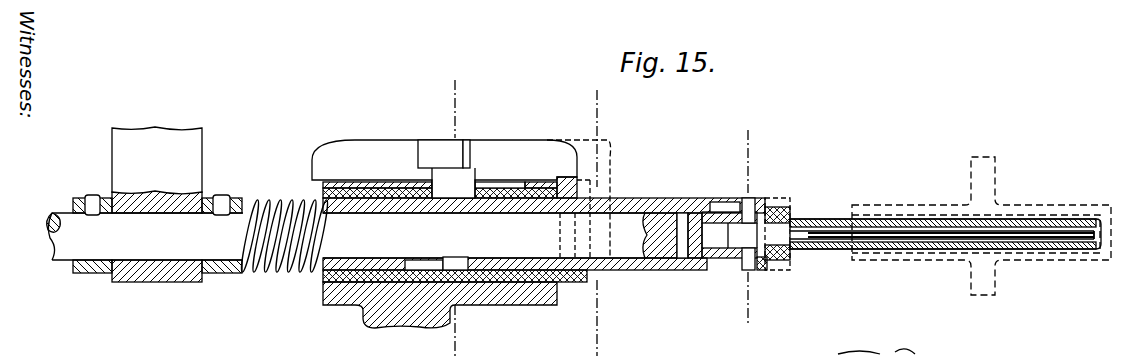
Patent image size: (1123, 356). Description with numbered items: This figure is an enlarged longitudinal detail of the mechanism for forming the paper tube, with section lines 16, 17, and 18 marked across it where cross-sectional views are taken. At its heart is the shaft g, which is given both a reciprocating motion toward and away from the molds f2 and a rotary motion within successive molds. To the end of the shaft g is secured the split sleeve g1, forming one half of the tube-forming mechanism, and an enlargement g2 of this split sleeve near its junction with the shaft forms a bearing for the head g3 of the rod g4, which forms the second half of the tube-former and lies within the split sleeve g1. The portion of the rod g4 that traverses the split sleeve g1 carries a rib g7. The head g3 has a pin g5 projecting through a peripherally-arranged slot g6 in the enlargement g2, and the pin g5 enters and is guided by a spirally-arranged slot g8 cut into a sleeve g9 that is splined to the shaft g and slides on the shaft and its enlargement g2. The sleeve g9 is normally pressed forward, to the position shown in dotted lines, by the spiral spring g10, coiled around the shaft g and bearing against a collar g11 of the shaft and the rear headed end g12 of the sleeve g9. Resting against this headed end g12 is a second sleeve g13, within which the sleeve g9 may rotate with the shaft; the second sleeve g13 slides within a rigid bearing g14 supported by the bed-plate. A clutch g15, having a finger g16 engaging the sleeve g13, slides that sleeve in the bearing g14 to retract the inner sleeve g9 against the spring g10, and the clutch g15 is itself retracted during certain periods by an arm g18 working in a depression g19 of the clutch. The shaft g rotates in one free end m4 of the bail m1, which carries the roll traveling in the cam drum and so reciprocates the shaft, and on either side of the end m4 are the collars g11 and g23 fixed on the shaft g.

The shaft g is at (67, 250).
The split sleeve g1 is at (838, 252).
The enlargement g2 is at (710, 270).
The head g3 is at (758, 227).
The rod g4 is at (920, 238).
The pin g5 is at (750, 200).
The peripherally-arranged slot g6 is at (760, 263).
The rib g7 is at (1048, 234).
The spirally-arranged slot g8 is at (722, 200).
The sleeve g9 is at (348, 203).
The spiral spring g10 is at (297, 270).
The collar g11 is at (225, 278).
The rear headed end g12 is at (323, 283).
The second sleeve g13 is at (352, 188).
The rigid bearing g14 is at (386, 325).
The clutch g15 is at (527, 143).
The finger g16 is at (442, 187).
The arm g18 is at (440, 148).
The depression g19 is at (467, 145).
The collar g23 is at (92, 277).
The bail m1 is at (135, 135).
The free end of the bail m4 is at (162, 277).
The mold f2 is at (1031, 207).
The section line 16 16 is at (456, 203).
The section line 17 17 is at (614, 223).
The section line 18 18 is at (753, 214).